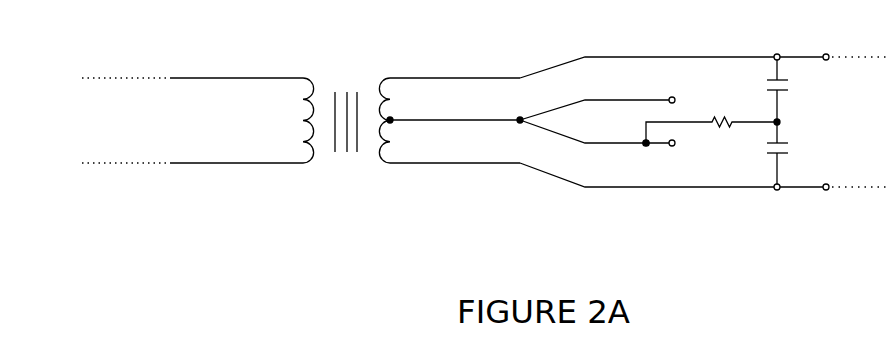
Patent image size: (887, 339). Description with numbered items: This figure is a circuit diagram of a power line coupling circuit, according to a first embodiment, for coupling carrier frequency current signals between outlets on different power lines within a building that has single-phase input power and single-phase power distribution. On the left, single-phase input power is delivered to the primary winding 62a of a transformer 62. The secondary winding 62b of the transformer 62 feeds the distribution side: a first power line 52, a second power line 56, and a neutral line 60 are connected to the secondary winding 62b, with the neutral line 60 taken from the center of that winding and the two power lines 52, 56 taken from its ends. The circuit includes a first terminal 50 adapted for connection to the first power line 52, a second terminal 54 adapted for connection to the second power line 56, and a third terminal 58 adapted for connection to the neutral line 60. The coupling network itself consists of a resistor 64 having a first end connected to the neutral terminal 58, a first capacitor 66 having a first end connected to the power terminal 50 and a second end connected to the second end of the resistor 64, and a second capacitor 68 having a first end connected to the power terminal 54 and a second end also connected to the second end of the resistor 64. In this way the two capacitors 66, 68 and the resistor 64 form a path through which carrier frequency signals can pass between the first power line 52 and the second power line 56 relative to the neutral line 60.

The first terminal 50 is at (789, 53).
The first power line 52 is at (690, 54).
The second terminal 54 is at (771, 194).
The second power line 56 is at (677, 189).
The third terminal 58 is at (684, 146).
The neutral line 60 is at (413, 121).
The transformer 62 is at (347, 79).
The primary winding 62a is at (302, 121).
The secondary winding 62b is at (392, 100).
The resistor 64 is at (713, 110).
The first capacitor 66 is at (796, 90).
The second capacitor 68 is at (796, 154).